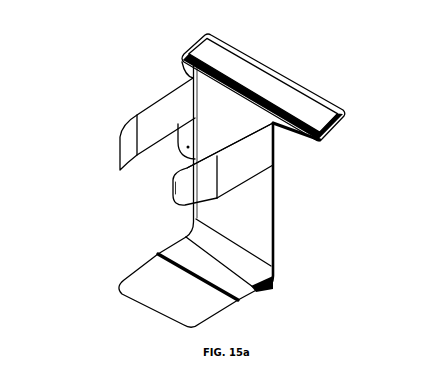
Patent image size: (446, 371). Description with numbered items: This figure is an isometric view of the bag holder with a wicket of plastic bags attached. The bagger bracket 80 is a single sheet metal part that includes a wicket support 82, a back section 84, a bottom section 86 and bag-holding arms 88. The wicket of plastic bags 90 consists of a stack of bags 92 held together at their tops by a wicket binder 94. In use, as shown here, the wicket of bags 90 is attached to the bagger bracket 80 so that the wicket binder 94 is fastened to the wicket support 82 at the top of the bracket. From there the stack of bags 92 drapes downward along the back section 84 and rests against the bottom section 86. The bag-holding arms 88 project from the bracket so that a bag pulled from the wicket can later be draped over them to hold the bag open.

The bagger bracket 80 is at (113, 269).
The wicket support 82 is at (335, 131).
The back section 84 is at (276, 272).
The bottom section 86 is at (155, 298).
The bag-holding arms 88 is at (153, 113).
The wicket of plastic bags 90 is at (294, 69).
The stack of bags 92 is at (250, 233).
The wicket binder 94 is at (318, 113).